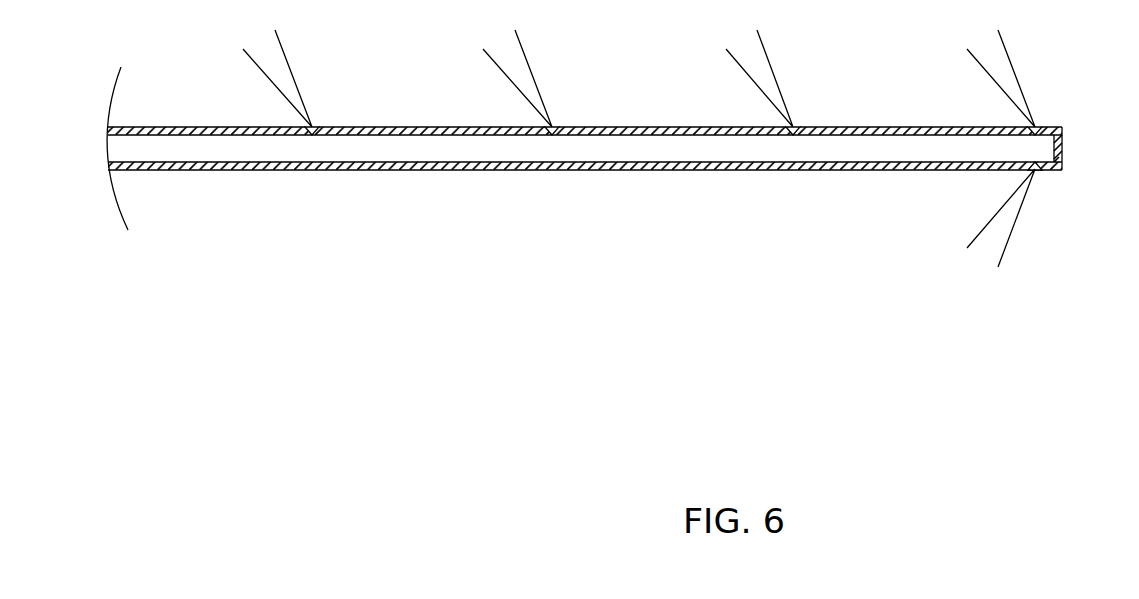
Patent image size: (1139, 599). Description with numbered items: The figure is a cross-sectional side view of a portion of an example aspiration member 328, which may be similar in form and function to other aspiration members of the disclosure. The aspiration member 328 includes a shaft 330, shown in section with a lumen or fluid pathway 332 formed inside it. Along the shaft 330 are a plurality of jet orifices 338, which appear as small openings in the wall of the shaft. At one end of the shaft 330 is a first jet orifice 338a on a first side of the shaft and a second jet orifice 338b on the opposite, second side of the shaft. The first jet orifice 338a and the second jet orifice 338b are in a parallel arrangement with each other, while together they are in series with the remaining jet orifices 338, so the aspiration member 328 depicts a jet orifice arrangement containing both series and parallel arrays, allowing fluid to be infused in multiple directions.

The aspiration member 328 is at (620, 148).
The shaft 330 is at (326, 162).
The lumen or fluid pathway 332 is at (477, 148).
The jet orifices 338 is at (314, 126).
The first jet orifice 338a is at (1037, 127).
The second jet orifice 338b is at (1037, 171).